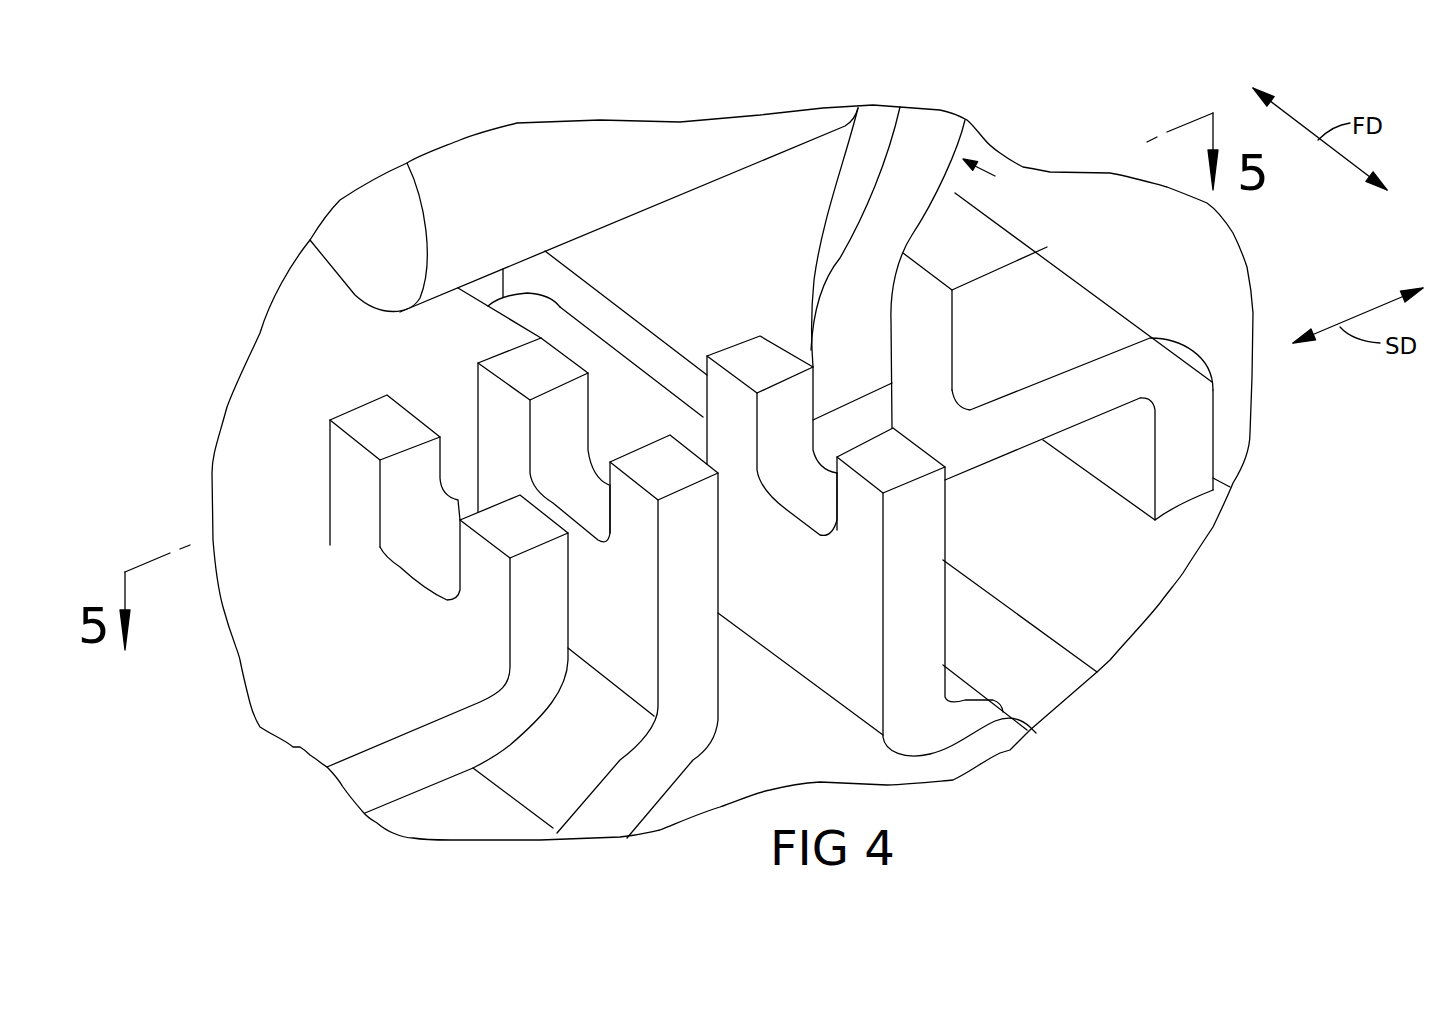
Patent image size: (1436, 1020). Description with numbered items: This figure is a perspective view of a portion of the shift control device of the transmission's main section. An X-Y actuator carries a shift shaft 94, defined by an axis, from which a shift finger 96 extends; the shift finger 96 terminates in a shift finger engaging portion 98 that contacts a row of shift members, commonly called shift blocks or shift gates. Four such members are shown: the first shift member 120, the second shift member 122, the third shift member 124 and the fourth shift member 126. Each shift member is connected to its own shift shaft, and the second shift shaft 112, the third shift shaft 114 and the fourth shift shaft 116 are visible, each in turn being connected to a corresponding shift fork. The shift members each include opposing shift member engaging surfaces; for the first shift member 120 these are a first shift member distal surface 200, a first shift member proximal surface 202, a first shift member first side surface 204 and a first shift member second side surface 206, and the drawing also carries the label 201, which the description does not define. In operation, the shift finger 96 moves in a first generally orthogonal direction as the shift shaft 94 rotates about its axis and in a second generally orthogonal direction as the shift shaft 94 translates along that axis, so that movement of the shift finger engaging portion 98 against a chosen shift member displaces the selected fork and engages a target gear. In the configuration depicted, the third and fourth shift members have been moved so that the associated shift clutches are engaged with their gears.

The shift shaft 94 is at (757, 140).
The shift finger 96 is at (995, 172).
The shift finger engaging portion 98 is at (870, 353).
The second shift shaft 112 is at (375, 727).
The third shift shaft 114 is at (990, 747).
The fourth shift shaft 116 is at (1127, 593).
The first shift member 120 is at (367, 589).
The second shift member 122 is at (515, 367).
The third shift member 124 is at (913, 457).
The fourth shift member 126 is at (922, 288).
The first shift member distal surface 200 is at (367, 604).
The first leg 201 is at (568, 580).
The first shift member proximal surface 202 is at (405, 548).
The first shift member first side surface 204 is at (347, 497).
The first shift member second side surface 206 is at (333, 523).